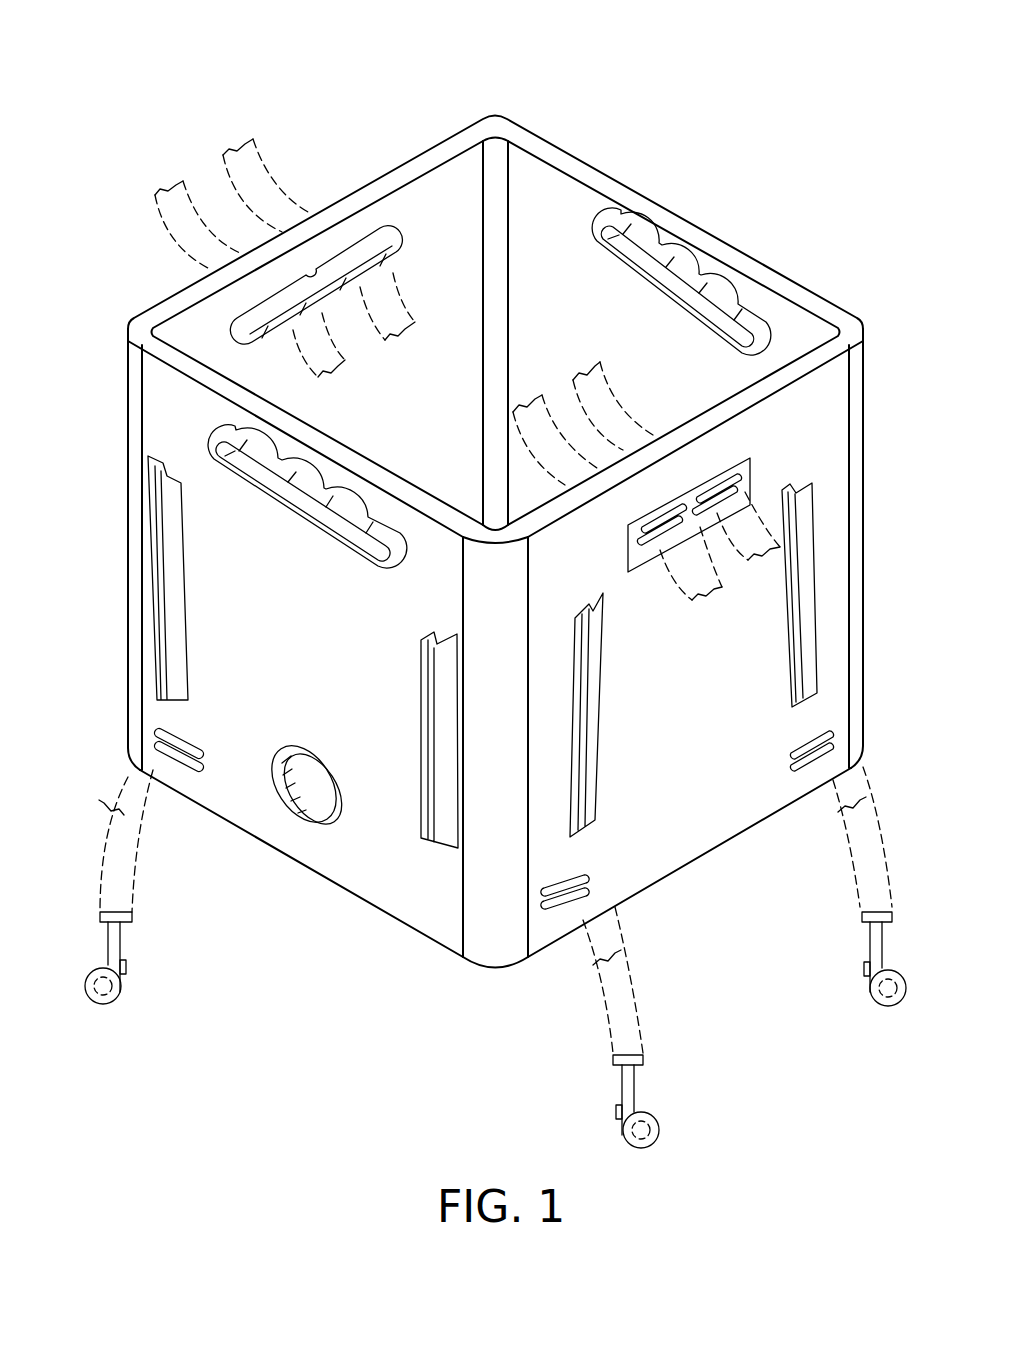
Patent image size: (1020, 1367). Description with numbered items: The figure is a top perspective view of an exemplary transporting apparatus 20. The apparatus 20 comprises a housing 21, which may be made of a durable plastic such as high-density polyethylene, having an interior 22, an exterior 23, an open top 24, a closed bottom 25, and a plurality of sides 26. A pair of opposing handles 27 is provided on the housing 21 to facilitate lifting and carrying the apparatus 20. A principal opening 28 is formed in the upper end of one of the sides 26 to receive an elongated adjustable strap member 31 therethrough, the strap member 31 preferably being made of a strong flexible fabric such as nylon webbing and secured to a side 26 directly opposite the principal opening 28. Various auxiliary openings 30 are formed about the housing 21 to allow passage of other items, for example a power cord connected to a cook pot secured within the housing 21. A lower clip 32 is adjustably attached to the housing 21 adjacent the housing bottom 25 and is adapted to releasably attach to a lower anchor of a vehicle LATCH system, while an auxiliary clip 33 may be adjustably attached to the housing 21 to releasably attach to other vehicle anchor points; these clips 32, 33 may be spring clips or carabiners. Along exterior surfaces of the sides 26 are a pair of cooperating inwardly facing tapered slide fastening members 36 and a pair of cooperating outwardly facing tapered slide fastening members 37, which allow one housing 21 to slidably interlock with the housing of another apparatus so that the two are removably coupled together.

The transporting apparatus 20 is at (238, 62).
The housing 21 is at (112, 394).
The interior 22 is at (776, 330).
The exterior 23 is at (818, 425).
The open top 24 is at (654, 214).
The closed bottom 25 is at (372, 910).
The sides 26 is at (440, 215).
The handles 27 is at (316, 520).
The principal opening 28 is at (403, 258).
The auxiliary openings 30 is at (278, 790).
The strap member 31 is at (388, 345).
The lower clip 32 is at (870, 988).
The auxiliary clip 33 is at (122, 985).
The inwardly facing tapered slide fastening members 36 is at (170, 600).
The outwardly facing tapered slide fastening members 37 is at (583, 677).